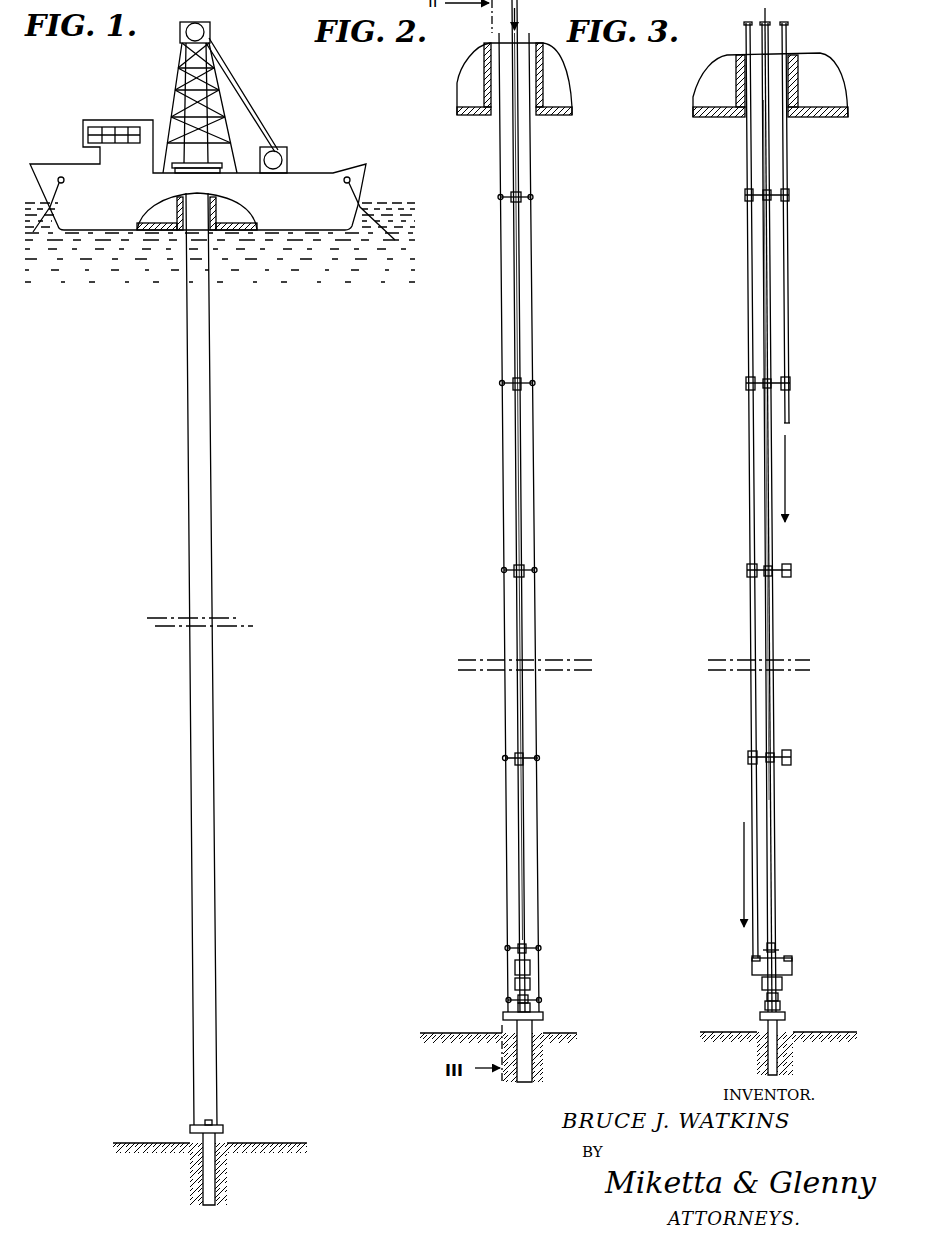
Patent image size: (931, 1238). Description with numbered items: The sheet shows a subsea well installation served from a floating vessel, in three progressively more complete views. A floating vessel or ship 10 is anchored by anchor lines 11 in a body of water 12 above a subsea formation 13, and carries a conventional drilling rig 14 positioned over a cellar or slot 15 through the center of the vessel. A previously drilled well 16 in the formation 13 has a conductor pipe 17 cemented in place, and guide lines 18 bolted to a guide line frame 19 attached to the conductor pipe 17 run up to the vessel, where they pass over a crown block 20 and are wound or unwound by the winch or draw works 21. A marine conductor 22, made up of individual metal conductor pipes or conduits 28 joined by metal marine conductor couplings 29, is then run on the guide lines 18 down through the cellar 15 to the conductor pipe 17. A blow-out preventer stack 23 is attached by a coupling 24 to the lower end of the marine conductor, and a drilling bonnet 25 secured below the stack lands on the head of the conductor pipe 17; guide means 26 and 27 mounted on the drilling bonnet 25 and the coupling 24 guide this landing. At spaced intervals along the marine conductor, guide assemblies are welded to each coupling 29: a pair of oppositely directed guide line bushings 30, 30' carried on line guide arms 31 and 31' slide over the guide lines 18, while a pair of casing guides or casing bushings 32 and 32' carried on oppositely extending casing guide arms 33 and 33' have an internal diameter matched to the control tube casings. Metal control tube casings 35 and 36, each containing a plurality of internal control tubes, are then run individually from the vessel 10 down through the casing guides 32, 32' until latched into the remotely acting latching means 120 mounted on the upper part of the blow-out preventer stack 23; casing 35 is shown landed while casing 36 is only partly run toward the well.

In FIG. 1, the floating vessel or ship 10 is at (360, 166).
In FIG. 2, the floating vessel or ship 10 is at (460, 80).
In FIG. 3, the floating vessel or ship 10 is at (705, 80).
In FIG. 1, the anchor lines 11 is at (45, 222).
In FIG. 1, the body of water 12 is at (220, 265).
In FIG. 1, the subsea formation 13 is at (140, 1143).
In FIG. 1, the drilling rig 14 is at (175, 88).
In FIG. 1, the cellar or slot 15 is at (173, 222).
In FIG. 2, the cellar or slot 15 is at (536, 90).
In FIG. 3, the cellar or slot 15 is at (790, 93).
In FIG. 1, the well 16 is at (230, 1183).
In FIG. 2, the well 16 is at (535, 1053).
In FIG. 3, the well 16 is at (757, 1058).
In FIG. 1, the conductor pipe 17 is at (217, 1137).
In FIG. 2, the conductor pipe 17 is at (517, 1025).
In FIG. 3, the conductor pipe 17 is at (775, 1037).
In FIG. 1, the guide lines 18 is at (193, 930).
In FIG. 2, the guide lines 18 is at (532, 302).
In FIG. 3, the guide lines 18 is at (762, 300).
In FIG. 1, the guide line frame 19 is at (223, 1127).
In FIG. 2, the guide line frame 19 is at (543, 1015).
In FIG. 3, the guide line frame 19 is at (760, 1017).
In FIG. 1, the crown block 20 is at (212, 25).
In FIG. 1, the winch or draw works 21 is at (287, 150).
In FIG. 2, the marine conductor 22 is at (525, 478).
In FIG. 3, the marine conductor 22 is at (775, 705).
In FIG. 2, the blow-out preventer stack 23 is at (533, 970).
In FIG. 3, the blow-out preventer stack 23 is at (753, 978).
In FIG. 2, the coupling 24 is at (525, 950).
In FIG. 3, the coupling 24 is at (777, 945).
In FIG. 2, the drilling bonnet 25 is at (530, 1000).
In FIG. 3, the drilling bonnet 25 is at (780, 1000).
In FIG. 2, the guide means 26 is at (505, 1000).
In FIG. 2, the guide means 27 is at (505, 948).
In FIG. 3, the guide means 27 is at (779, 950).
In FIG. 2, the conductor pipes or conduits 28 is at (522, 530).
In FIG. 3, the conductor pipes or conduits 28 is at (773, 618).
In FIG. 3, the marine conductor couplings 29 is at (773, 193).
In FIG. 2, the guide line guide or bushing 30 is at (499, 393).
In FIG. 3, the guide line guide or bushing 30 is at (738, 595).
In FIG. 2, the guide line guide or bushing 30' is at (555, 390).
In FIG. 2, the line guide arm 31 is at (491, 590).
In FIG. 2, the line guide arm 31' is at (551, 586).
In FIG. 3, the casing guide or casing bushing 32 is at (750, 385).
In FIG. 2, the casing guide or casing bushing 32' is at (522, 561).
In FIG. 3, the casing guide or casing bushing 32' is at (807, 384).
In FIG. 3, the casing guide arm 33 is at (753, 584).
In FIG. 3, the casing guide arm 33' is at (802, 584).
In FIG. 3, the control tube casing 35 is at (750, 477).
In FIG. 3, the control tube casing 36 is at (787, 283).
In FIG. 2, the remotely acting latching means 120 is at (515, 970).
In FIG. 3, the remotely acting latching means 120 is at (752, 968).